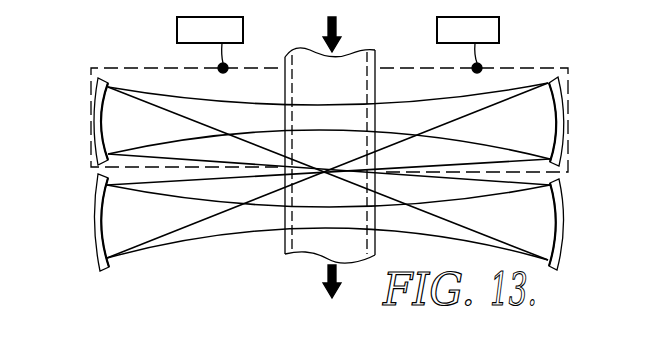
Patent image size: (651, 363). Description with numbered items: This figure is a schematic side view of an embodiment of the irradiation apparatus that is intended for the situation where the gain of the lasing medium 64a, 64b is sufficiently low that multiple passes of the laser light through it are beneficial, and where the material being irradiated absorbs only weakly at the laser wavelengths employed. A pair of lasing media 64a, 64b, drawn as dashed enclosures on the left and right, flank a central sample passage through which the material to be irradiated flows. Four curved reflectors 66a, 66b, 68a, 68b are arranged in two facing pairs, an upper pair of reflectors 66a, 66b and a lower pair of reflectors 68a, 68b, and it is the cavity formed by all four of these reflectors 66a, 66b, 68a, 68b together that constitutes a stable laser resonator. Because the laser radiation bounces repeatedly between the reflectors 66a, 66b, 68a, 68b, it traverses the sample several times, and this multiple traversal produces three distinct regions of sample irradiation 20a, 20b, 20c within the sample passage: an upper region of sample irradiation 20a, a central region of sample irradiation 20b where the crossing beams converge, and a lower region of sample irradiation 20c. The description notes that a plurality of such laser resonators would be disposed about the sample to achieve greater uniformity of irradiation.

The region of sample irradiation 20a is at (334, 120).
The region of sample irradiation 20b is at (334, 167).
The region of sample irradiation 20c is at (337, 218).
The lasing medium 64a is at (517, 82).
The lasing medium 64b is at (145, 77).
The reflector 66a is at (560, 130).
The reflector 66b is at (96, 122).
The reflector 68a is at (560, 233).
The reflector 68b is at (92, 237).